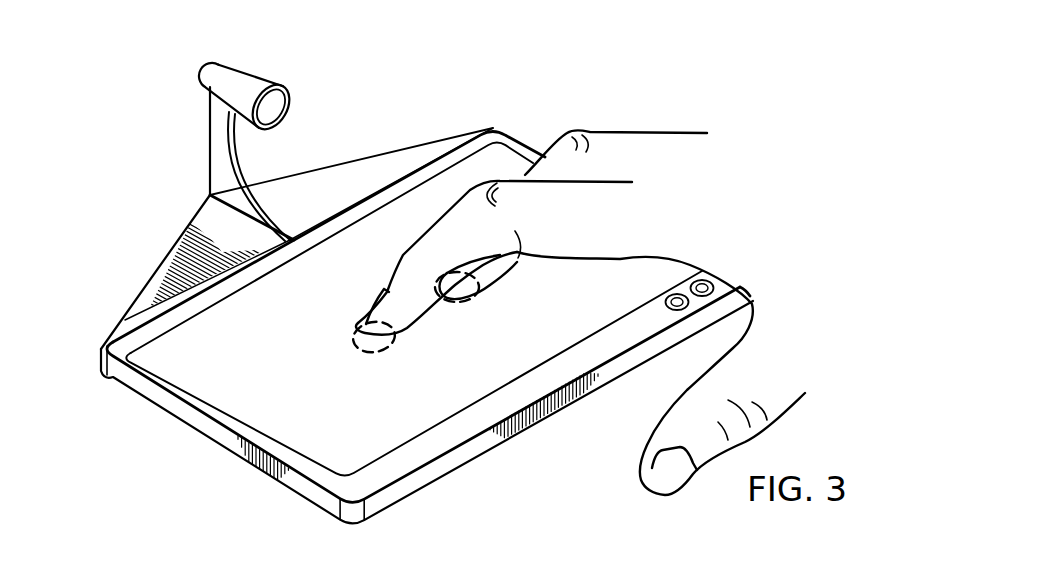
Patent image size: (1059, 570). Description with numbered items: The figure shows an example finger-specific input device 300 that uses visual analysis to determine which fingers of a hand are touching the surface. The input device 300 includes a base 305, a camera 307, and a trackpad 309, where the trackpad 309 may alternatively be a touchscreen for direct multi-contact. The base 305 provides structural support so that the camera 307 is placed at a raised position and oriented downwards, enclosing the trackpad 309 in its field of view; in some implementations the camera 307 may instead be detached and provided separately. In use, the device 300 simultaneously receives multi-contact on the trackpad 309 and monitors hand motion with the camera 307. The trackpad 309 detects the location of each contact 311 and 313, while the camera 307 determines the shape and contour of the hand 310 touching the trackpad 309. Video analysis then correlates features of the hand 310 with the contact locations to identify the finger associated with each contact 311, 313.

The finger-specific input device 300 is at (126, 203).
The base 305 is at (219, 446).
The camera 307 is at (257, 74).
The trackpad 309 is at (506, 138).
The hand 310 is at (609, 119).
The contact 311 is at (380, 352).
The contact 313 is at (462, 304).